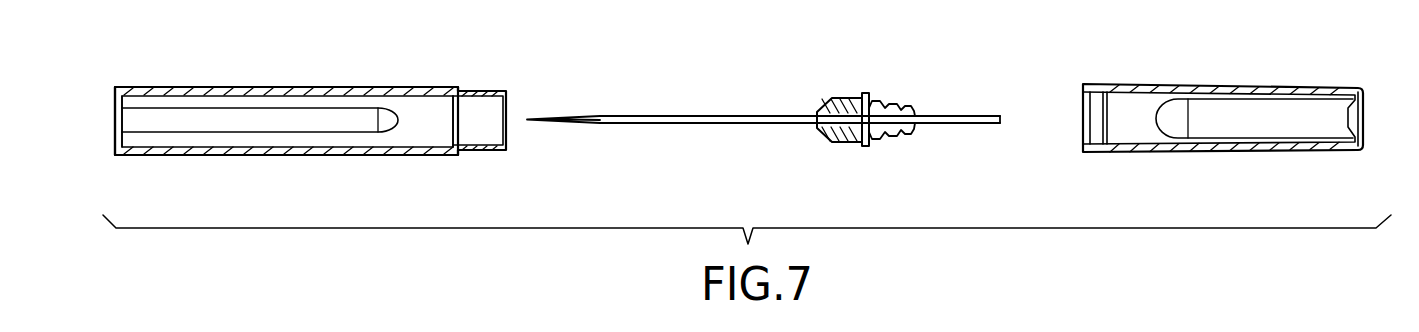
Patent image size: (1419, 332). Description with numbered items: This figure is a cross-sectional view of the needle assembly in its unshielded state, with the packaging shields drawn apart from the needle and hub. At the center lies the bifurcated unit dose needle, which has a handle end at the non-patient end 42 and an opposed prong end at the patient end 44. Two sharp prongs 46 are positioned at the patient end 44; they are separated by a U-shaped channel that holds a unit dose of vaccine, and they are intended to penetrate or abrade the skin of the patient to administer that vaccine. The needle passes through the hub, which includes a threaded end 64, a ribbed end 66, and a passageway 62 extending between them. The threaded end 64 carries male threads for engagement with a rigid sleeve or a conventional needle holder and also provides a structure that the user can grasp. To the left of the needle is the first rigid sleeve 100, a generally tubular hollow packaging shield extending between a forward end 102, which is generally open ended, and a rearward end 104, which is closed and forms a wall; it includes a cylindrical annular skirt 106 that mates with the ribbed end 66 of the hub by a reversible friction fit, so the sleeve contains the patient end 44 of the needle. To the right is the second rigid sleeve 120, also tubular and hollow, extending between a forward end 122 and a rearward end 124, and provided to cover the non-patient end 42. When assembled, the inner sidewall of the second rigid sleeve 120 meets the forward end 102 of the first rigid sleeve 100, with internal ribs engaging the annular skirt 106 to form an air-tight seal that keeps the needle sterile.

The non-patient end 42 is at (982, 116).
The patient end 44 is at (677, 116).
The sharp prongs 46 is at (546, 124).
The passageway 62 is at (818, 130).
The threaded end 64 is at (890, 135).
The ribbed end 66 is at (845, 97).
The first rigid sleeve 100 is at (280, 140).
The forward end 102 is at (459, 156).
The rearward end 104 is at (117, 157).
The cylindrical annular skirt 106 is at (483, 91).
The second rigid sleeve 120 is at (1238, 142).
The forward end 122 is at (1084, 154).
The rearward end 124 is at (1364, 151).